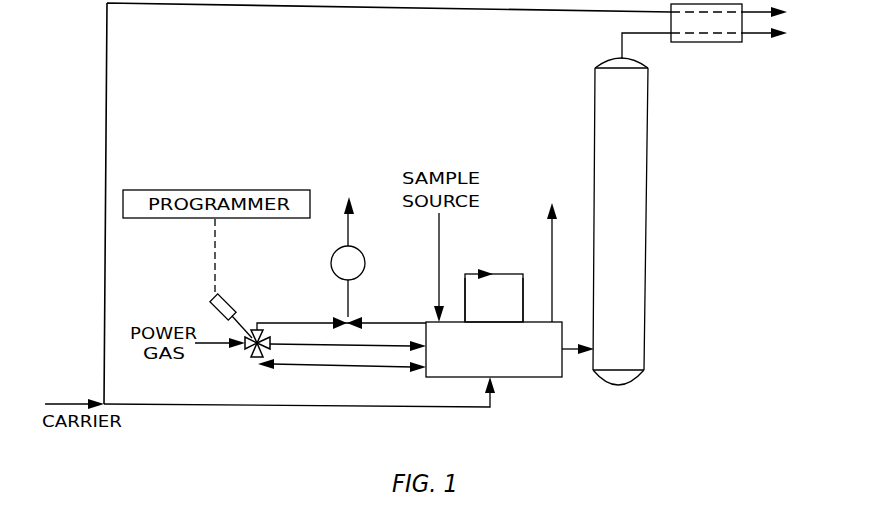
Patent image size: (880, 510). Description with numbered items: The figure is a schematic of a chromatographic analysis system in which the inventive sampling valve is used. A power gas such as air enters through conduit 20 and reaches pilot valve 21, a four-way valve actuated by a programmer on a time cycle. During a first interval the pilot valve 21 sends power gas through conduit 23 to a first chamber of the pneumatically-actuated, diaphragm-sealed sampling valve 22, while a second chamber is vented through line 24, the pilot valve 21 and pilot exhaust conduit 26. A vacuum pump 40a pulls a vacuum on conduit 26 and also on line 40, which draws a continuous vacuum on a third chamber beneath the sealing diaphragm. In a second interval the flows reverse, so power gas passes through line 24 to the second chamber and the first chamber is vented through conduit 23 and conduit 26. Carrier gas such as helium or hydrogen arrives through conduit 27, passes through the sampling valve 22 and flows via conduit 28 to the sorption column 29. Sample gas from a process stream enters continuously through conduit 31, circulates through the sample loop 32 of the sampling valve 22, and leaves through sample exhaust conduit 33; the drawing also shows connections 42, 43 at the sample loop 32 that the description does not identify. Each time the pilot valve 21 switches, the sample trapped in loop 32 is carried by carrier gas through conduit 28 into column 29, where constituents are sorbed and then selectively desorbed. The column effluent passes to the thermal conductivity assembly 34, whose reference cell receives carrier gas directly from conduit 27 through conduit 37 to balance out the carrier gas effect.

The power gas conduit 20 is at (208, 352).
The pilot valve 21 is at (226, 297).
The sampling valve 22 is at (548, 378).
The conduit 23 is at (377, 345).
The line 24 is at (355, 367).
The pilot exhaust conduit 26 is at (285, 323).
The carrier gas conduit 27 is at (492, 404).
The conduit 28 is at (570, 348).
The sorption column 29 is at (633, 176).
The conduit 31 is at (439, 232).
The sample loop 32 is at (500, 274).
The sample exhaust conduit 33 is at (552, 246).
The thermal conductivity assembly 34 is at (707, 42).
The conduit 37 is at (205, 5).
The line 40 is at (402, 323).
The vacuum pump 40a is at (331, 260).
The sample loop inlet 42 is at (465, 277).
The sample loop outlet 43 is at (524, 290).